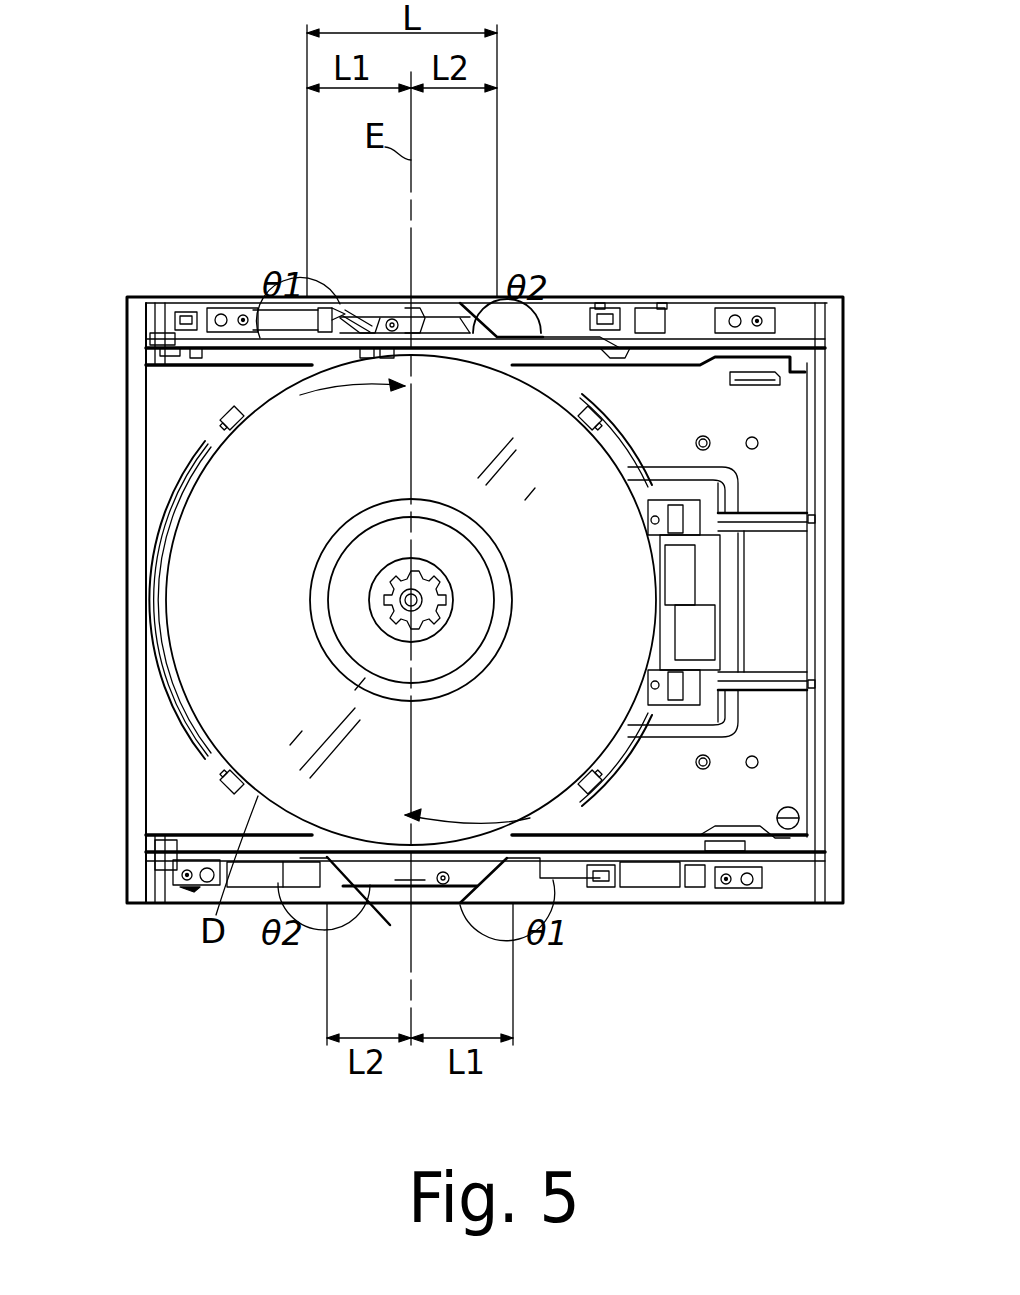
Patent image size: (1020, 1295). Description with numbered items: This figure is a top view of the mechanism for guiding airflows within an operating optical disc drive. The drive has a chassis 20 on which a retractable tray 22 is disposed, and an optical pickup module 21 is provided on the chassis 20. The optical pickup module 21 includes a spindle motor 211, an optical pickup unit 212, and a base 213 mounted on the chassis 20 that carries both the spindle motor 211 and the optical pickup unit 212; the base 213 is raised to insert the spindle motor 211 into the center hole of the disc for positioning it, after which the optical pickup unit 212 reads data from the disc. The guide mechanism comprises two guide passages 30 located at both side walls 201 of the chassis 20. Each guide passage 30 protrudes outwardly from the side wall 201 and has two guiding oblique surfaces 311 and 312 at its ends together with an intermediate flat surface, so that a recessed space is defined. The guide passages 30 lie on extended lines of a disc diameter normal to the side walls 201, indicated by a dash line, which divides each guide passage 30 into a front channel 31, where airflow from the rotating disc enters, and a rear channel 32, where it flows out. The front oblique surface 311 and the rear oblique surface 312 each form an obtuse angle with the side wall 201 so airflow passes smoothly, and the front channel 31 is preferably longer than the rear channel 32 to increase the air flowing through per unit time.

The chassis 20 is at (678, 298).
The side wall 201 is at (243, 298).
The optical pickup module 21 is at (716, 542).
The spindle motor 211 is at (390, 597).
The optical pickup unit 212 is at (690, 590).
The base 213 is at (733, 494).
The tray 22 is at (205, 456).
The guide passage 30 is at (392, 298).
The front channel 31 is at (375, 298).
The front oblique surface 311 is at (348, 298).
The rear oblique surface 312 is at (450, 298).
The rear channel 32 is at (418, 298).